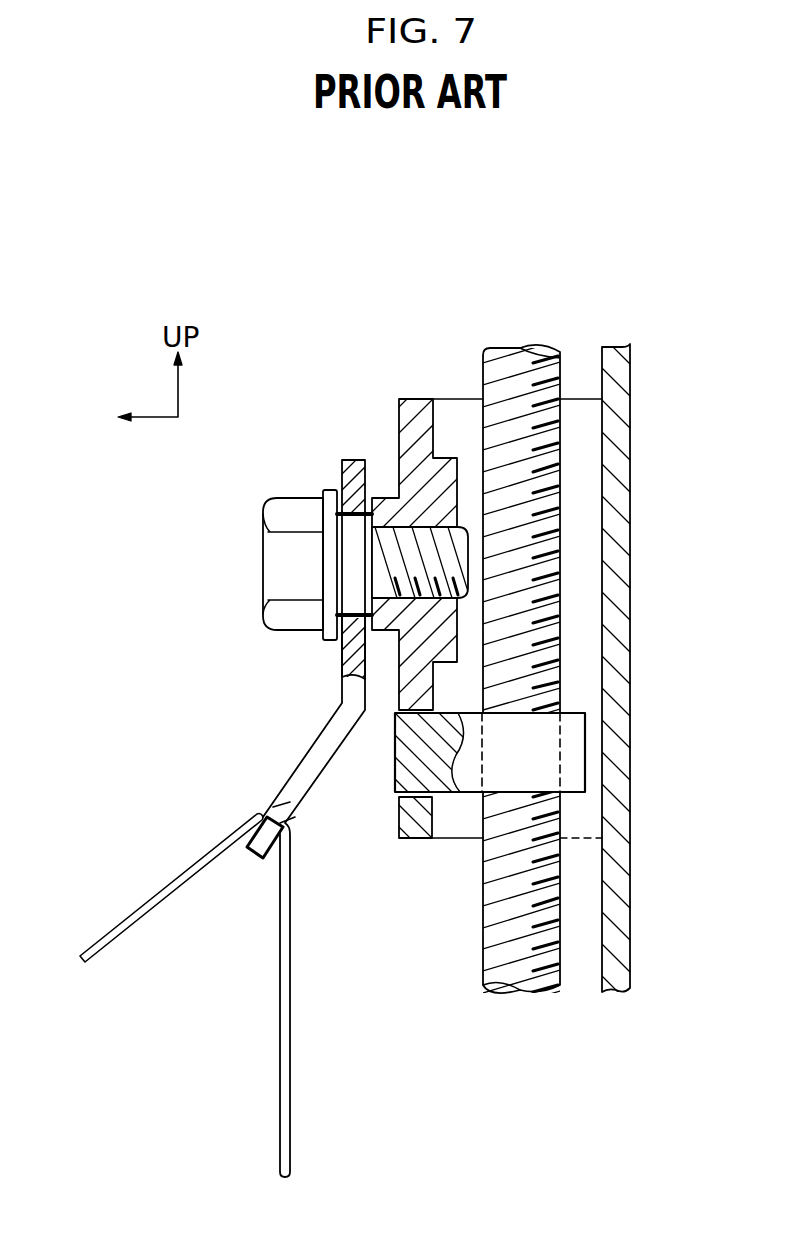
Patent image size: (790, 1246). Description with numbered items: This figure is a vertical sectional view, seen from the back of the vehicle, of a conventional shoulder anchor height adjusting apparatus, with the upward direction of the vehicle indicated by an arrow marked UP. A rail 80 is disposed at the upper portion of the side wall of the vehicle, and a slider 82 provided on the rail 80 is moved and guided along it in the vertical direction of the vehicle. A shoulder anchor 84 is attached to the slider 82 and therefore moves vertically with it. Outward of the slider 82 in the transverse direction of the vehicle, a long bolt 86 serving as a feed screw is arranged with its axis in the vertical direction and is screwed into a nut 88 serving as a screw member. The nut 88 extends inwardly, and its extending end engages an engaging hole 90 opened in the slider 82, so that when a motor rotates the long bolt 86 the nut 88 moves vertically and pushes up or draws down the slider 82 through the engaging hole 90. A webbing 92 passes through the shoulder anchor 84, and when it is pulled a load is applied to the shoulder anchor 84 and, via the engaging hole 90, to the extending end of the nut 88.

The rail 80 is at (623, 512).
The slider 82 is at (420, 417).
The shoulder anchor 84 is at (358, 467).
The long bolt 86 is at (512, 372).
The nut 88 is at (507, 765).
The engaging hole 90 is at (407, 784).
The webbing 92 is at (290, 1038).